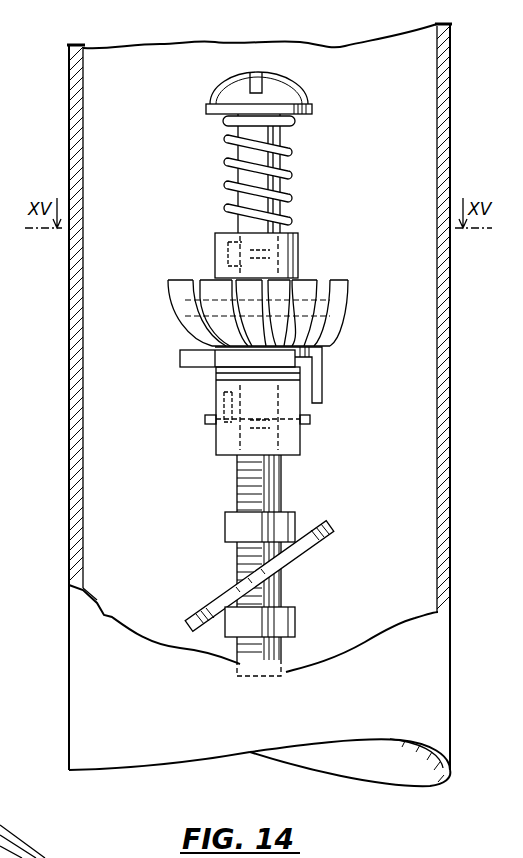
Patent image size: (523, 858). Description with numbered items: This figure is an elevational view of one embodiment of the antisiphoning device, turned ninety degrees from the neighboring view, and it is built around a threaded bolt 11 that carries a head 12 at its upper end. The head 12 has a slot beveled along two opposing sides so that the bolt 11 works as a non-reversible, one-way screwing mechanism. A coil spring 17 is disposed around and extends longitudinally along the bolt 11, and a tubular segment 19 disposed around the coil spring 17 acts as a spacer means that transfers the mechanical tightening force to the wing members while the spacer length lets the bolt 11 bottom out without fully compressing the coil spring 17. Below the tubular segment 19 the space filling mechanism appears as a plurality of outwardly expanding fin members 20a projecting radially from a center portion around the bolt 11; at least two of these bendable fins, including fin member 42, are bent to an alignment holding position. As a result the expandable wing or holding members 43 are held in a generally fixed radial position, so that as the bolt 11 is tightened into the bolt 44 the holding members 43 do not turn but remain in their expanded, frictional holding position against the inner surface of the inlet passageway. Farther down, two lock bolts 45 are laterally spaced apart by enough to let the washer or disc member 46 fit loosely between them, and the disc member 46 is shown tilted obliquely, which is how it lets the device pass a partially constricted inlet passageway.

The head 12 is at (293, 93).
The bolt 11 is at (282, 190).
The coil spring 17 is at (284, 175).
The tubular segment 19 is at (299, 241).
The fin members 20a is at (313, 290).
The fin member 42 is at (323, 379).
The wing members 43 is at (295, 445).
The bolt 44 is at (311, 420).
The lock bolts 45 is at (290, 516).
The disc member 46 is at (310, 536).